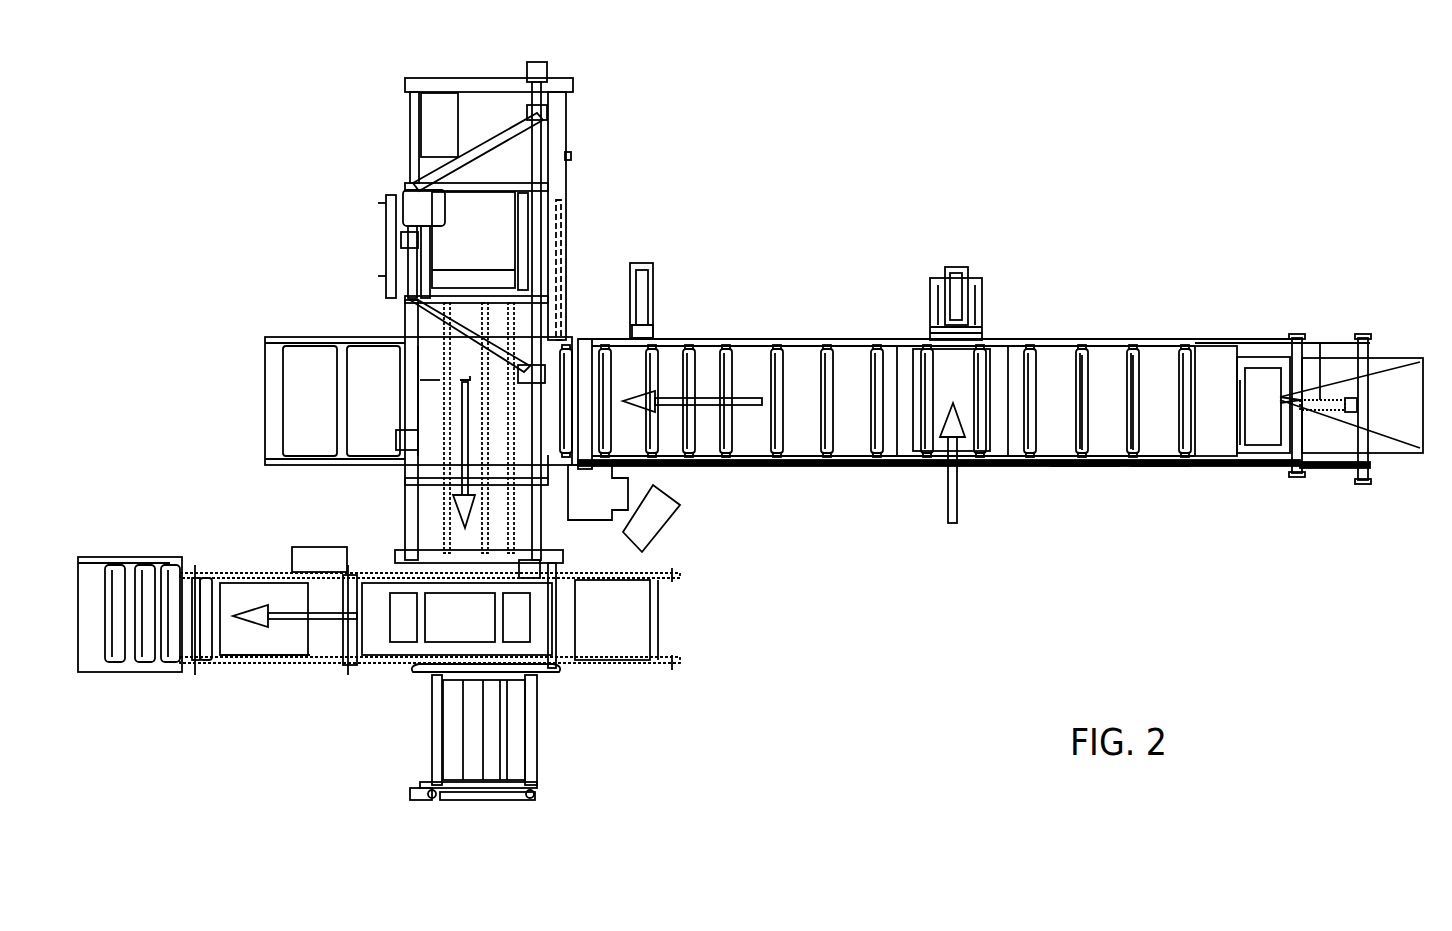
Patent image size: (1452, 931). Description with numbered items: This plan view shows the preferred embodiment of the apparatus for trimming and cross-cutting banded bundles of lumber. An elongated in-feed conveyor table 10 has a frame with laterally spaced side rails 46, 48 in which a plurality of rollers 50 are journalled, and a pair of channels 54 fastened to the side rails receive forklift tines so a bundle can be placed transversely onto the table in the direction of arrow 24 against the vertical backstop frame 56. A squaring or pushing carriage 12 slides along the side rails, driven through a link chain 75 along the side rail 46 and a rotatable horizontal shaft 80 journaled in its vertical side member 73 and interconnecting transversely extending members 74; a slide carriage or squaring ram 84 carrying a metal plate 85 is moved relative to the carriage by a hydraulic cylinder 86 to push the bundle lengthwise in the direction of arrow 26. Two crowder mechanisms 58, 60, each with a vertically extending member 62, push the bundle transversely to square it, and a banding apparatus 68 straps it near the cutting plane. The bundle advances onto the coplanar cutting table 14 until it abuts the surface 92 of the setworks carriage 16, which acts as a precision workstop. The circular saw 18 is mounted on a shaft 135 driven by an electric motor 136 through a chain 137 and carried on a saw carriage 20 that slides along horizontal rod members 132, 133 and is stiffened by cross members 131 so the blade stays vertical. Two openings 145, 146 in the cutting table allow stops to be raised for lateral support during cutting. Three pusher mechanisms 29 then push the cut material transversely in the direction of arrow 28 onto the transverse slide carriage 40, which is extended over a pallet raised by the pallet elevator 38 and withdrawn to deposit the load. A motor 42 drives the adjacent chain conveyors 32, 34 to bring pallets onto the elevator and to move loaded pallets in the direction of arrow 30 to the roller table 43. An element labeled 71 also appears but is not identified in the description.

The in-feed conveyor table 10 is at (808, 336).
The squaring or pushing carriage 12 is at (1316, 400).
The cutting table 14 is at (435, 411).
The setworks carriage 16 is at (298, 326).
The circular saw 18 is at (558, 222).
The saw carriage 20 is at (482, 365).
The arrow 24 is at (958, 500).
The arrow 26 is at (743, 407).
The arrow 28 is at (469, 386).
The pusher mechanism 29 is at (506, 318).
The arrow 30 is at (284, 612).
The chain conveyor 32 is at (619, 660).
The chain conveyor 34 is at (260, 658).
The pallet elevator 38 is at (427, 628).
The transverse slide carriage 40 is at (510, 750).
The motor 42 is at (316, 548).
The roller table 43 is at (136, 556).
The side rail 46 is at (1150, 462).
The side rail 48 is at (1069, 338).
The rollers 50 is at (1170, 382).
The channels 54 is at (897, 440).
The backstop frame 56 is at (981, 314).
The crowder mechanism 58 is at (958, 262).
The crowder mechanism 60 is at (656, 267).
The vertically extending member 62 is at (650, 317).
The banding apparatus 68 is at (611, 497).
The control panel 71 is at (662, 513).
The vertical side member 73 is at (1334, 340).
The transversely extending members 74 is at (1363, 417).
The link chain 75 is at (1098, 462).
The rotatable horizontal shaft 80 is at (1318, 367).
The slide carriage or squaring ram 84 is at (1392, 356).
The metal plate 85 is at (1234, 436).
The hydraulic cylinder 86 is at (1322, 426).
The surface of the setworks carriage 92 is at (424, 388).
The cross members 131 is at (482, 190).
The horizontal rod member 132 is at (550, 139).
The horizontal rod member 133 is at (404, 334).
The shaft 135 is at (466, 270).
The electric motor 136 is at (413, 196).
The chain 137 is at (386, 242).
The opening 145 is at (556, 468).
The opening 146 is at (495, 447).